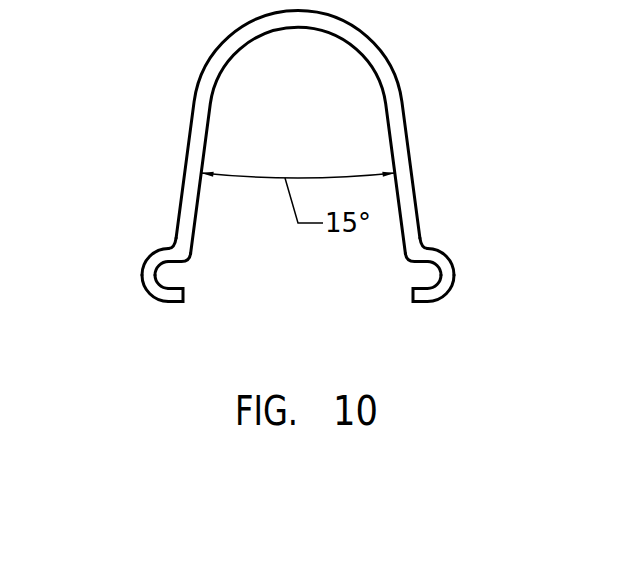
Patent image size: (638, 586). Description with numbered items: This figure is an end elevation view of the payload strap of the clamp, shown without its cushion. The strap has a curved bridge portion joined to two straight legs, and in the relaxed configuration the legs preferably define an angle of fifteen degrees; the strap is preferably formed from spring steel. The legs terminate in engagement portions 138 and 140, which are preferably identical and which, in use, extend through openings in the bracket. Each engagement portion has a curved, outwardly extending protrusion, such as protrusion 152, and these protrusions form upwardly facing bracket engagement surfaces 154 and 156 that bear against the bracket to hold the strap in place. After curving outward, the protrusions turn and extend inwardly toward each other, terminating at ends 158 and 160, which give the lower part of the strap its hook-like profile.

The engagement portion 138 is at (462, 259).
The engagement portion 140 is at (136, 263).
The protrusion 152 is at (146, 288).
The bracket engagement surface 154 is at (430, 240).
The bracket engagement surface 156 is at (167, 245).
The end 158 is at (413, 297).
The end 160 is at (183, 295).